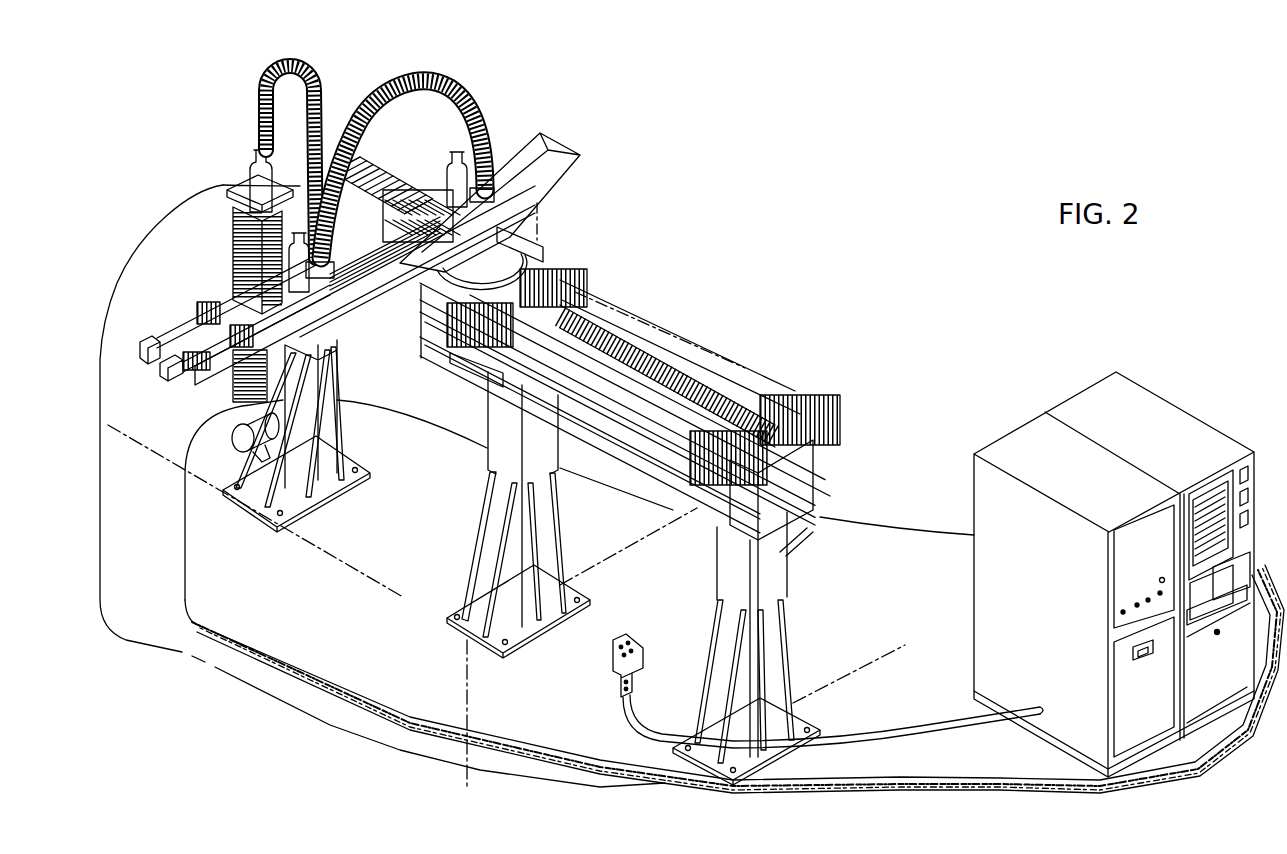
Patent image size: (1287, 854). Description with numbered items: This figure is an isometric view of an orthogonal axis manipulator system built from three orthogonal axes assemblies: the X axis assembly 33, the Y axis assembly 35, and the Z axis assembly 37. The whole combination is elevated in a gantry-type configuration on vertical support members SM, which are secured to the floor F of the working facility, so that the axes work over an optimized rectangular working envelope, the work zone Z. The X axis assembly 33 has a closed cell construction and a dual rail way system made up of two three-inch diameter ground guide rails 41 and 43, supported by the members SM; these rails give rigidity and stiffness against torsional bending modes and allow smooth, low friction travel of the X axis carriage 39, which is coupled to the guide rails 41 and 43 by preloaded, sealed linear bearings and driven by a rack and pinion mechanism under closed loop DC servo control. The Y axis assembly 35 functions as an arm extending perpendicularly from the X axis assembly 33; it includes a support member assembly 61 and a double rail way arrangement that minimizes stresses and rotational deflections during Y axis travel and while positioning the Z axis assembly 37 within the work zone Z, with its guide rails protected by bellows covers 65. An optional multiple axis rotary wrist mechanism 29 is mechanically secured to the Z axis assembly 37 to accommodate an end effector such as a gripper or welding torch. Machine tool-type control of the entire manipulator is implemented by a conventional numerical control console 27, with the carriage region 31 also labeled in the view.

The numerical control console 27 is at (1142, 397).
The multiple axis rotary wrist mechanism 29 is at (245, 428).
The trough carriage 31 is at (618, 145).
The X axis assembly 33 is at (648, 264).
The Y axis assembly 35 is at (378, 357).
The Z axis assembly 37 is at (215, 265).
The X axis carriage 39 is at (540, 245).
The guide rail 41 is at (712, 368).
The guide rail 43 is at (647, 417).
The support member assembly 61 is at (387, 285).
The bellows covers 65 is at (228, 395).
The vertical support members SM is at (322, 379).
The work zone Z is at (372, 585).
The floor F is at (554, 711).